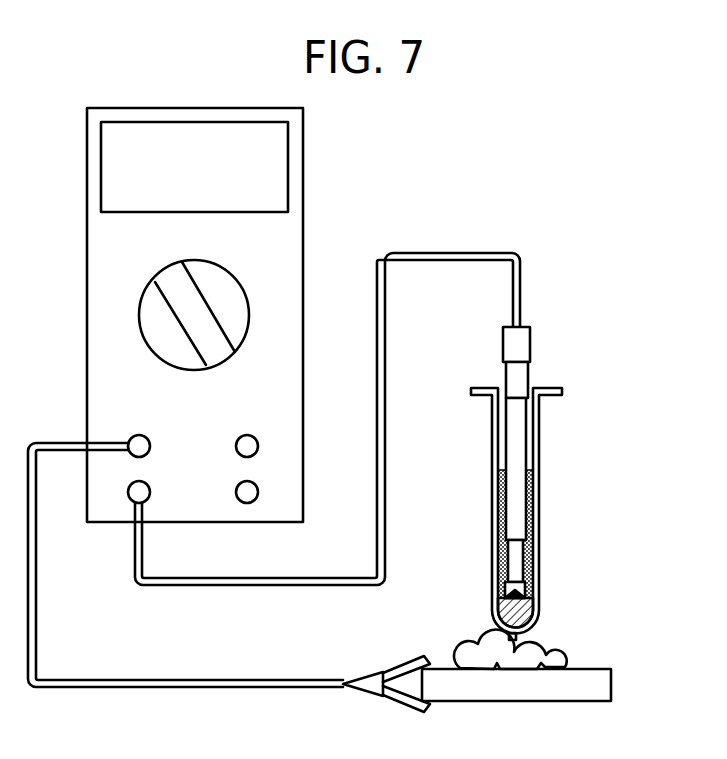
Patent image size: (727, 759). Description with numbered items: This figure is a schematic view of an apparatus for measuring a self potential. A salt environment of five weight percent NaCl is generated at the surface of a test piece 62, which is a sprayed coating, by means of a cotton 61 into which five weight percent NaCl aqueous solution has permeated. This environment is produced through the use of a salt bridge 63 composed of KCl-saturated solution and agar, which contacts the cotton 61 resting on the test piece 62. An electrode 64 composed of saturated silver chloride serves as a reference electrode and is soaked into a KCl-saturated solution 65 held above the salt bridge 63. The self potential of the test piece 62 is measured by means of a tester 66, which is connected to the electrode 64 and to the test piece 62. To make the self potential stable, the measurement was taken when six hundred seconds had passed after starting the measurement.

The cotton 61 is at (557, 650).
The test piece 62 is at (605, 683).
The salt bridge 63 is at (525, 610).
The electrode 64 is at (523, 343).
The KCl-saturated solution 65 is at (530, 512).
The tester 66 is at (303, 163).